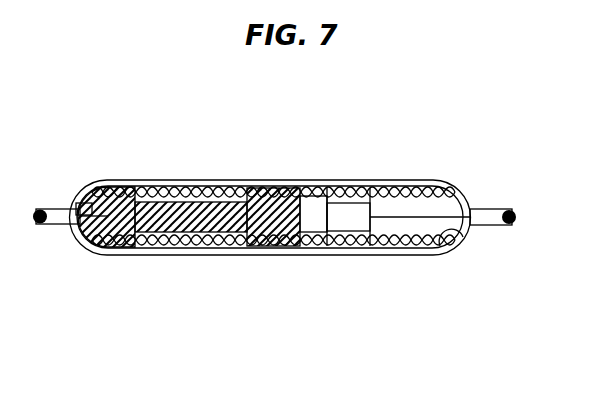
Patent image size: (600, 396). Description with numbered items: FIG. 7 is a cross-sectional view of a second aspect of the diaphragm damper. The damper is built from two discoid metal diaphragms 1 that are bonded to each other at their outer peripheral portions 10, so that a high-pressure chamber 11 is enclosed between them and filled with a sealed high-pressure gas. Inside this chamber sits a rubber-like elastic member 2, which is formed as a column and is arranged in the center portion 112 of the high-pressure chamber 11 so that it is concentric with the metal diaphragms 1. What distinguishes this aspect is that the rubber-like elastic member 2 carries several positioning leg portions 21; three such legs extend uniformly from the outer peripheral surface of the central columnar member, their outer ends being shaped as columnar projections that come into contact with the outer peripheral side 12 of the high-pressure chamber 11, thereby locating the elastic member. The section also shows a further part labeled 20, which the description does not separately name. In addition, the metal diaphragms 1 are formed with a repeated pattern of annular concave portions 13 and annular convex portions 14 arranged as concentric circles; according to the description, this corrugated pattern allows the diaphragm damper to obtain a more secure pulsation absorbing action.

The metal diaphragm 1 is at (405, 180).
The rubber-like elastic member 2 is at (258, 180).
The outer peripheral portion 10 is at (490, 208).
The high-pressure chamber 11 is at (315, 255).
The outer peripheral side 12 is at (443, 250).
The annular concave portion 13 is at (118, 180).
The annular convex portion 14 is at (100, 182).
The electrode block 20 is at (277, 180).
The positioning leg portion 21 is at (320, 180).
The center portion 112 is at (243, 255).